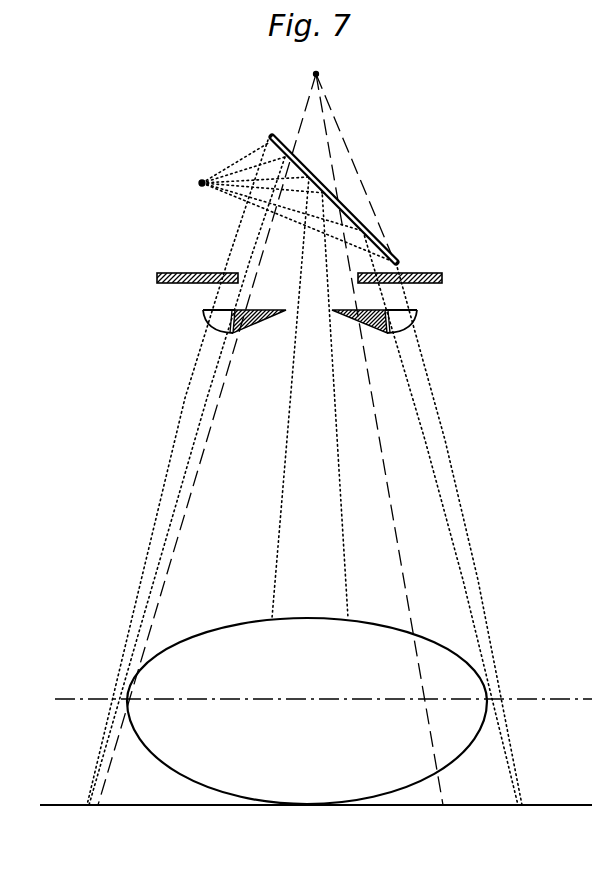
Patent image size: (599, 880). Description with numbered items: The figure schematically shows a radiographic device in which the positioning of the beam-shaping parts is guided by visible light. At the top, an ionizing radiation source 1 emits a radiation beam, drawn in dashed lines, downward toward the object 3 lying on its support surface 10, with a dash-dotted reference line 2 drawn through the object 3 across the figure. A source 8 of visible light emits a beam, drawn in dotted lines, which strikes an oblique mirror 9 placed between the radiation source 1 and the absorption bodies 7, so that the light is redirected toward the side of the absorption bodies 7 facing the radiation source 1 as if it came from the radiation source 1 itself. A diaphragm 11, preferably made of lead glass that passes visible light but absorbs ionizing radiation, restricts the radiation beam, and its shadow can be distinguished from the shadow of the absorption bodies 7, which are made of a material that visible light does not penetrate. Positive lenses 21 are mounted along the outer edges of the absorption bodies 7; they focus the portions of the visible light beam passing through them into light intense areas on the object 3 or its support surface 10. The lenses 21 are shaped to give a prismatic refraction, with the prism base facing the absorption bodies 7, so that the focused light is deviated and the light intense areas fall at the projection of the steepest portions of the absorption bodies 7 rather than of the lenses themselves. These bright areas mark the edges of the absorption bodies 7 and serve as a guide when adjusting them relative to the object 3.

The ionizing radiation source 1 is at (318, 74).
The optical axis / reference plane 2 is at (73, 698).
The object 3 is at (247, 638).
The absorption bodies 7 is at (250, 322).
The source of visible light 8 is at (201, 183).
The oblique mirror 9 is at (323, 199).
The support surface 10 is at (183, 806).
The diaphragm 11 is at (191, 273).
The positive lenses 21 is at (217, 317).